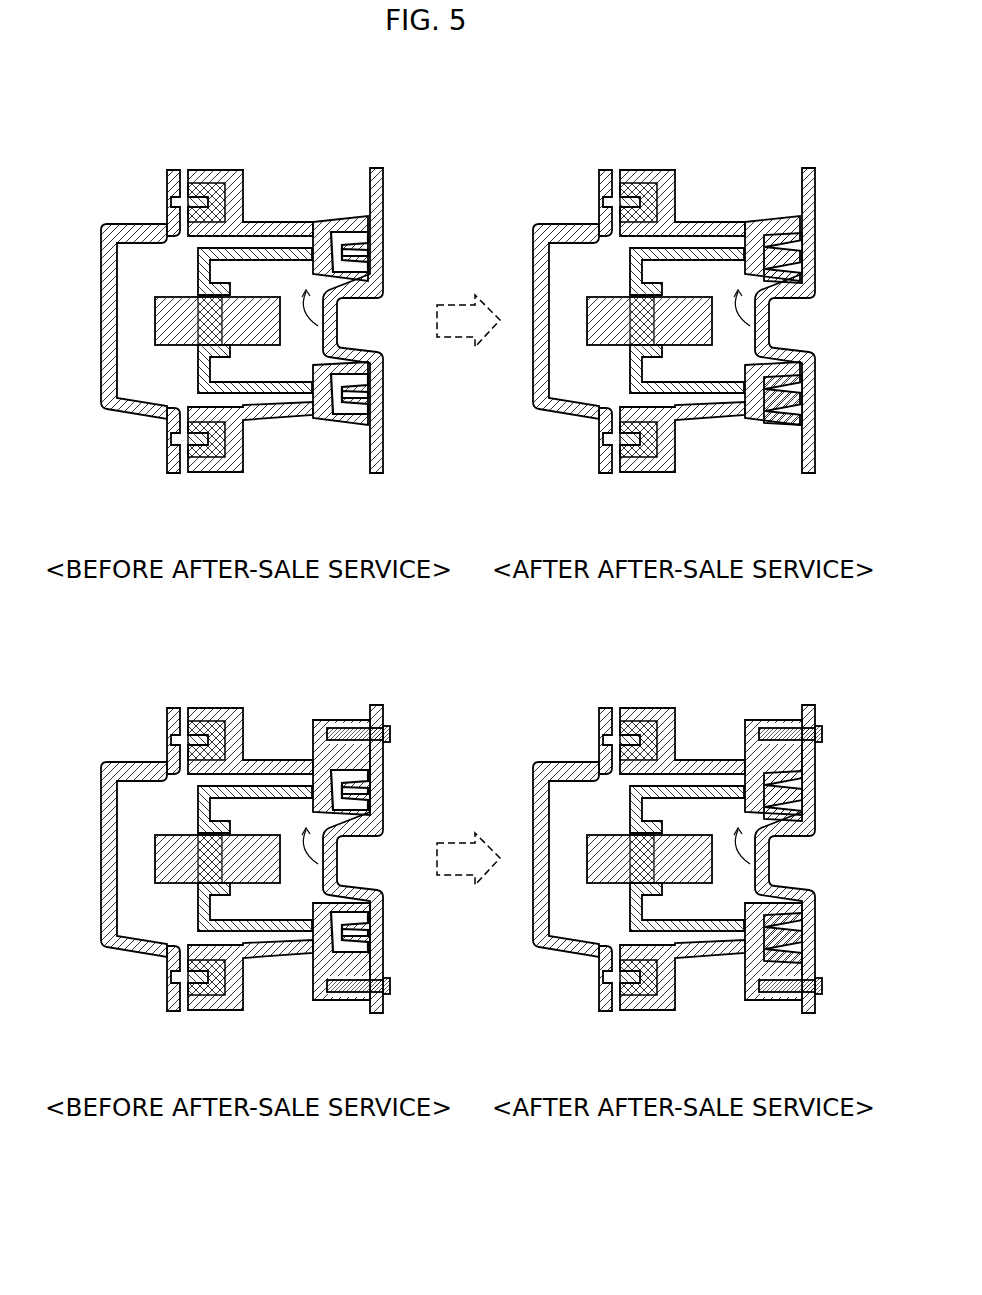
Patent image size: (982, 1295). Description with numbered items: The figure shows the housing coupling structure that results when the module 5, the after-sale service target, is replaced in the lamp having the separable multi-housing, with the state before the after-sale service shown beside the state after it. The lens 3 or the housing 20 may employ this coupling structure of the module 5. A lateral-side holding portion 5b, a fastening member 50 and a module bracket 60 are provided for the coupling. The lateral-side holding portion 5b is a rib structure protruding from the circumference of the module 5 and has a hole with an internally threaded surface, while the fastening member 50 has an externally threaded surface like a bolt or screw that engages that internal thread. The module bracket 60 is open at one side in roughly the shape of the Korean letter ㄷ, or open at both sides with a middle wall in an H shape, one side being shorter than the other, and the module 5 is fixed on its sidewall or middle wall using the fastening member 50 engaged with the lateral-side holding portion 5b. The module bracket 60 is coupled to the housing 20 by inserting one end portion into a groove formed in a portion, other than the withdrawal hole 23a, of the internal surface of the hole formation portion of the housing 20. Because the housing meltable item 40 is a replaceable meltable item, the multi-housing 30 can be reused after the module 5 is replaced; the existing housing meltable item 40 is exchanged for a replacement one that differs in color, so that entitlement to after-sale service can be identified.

The lens 3 is at (123, 227).
The module 5 is at (173, 325).
The lateral-side holding portion 5b is at (197, 388).
The housing 20 is at (273, 420).
The withdrawal hole 23a is at (340, 330).
The multi-housing 30 is at (373, 168).
The housing meltable item 40 is at (350, 405).
The fastening member 50 is at (233, 283).
The module bracket 60 is at (193, 262).